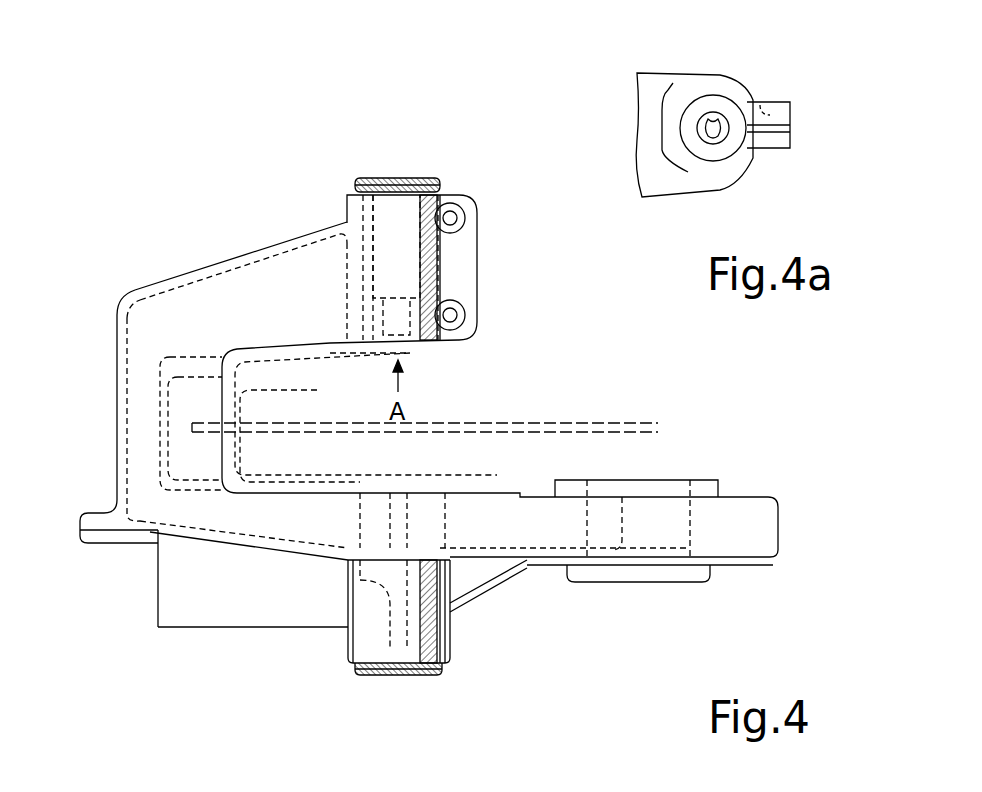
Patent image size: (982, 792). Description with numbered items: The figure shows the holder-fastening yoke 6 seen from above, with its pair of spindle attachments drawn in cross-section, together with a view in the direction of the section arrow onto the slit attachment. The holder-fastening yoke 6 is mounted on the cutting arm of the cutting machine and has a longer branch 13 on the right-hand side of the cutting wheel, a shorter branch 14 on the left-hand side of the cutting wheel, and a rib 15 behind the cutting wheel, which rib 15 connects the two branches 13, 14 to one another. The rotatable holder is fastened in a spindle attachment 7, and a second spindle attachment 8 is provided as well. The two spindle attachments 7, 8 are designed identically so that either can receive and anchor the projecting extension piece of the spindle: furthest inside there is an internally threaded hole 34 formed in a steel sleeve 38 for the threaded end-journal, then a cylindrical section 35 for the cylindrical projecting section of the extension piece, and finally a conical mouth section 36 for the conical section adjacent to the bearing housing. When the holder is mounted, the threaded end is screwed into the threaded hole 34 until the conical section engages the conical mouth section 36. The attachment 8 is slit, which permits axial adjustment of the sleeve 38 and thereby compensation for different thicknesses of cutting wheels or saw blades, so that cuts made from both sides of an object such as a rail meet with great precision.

In FIG. 4, the holder-fastening yoke 6 is at (124, 298).
In FIG. 4, the spindle attachment 7 is at (452, 648).
In FIG. 4, the second spindle attachment 8 is at (345, 210).
In FIG. 4A, the second spindle attachment 8 is at (748, 172).
In FIG. 4, the longer branch 13 is at (523, 540).
In FIG. 4, the shorter branch 14 is at (238, 270).
In FIG. 4, the rib 15 is at (152, 414).
In FIG. 4, the internally threaded hole 34 is at (410, 345).
In FIG. 4A, the internally threaded hole 34 is at (709, 112).
In FIG. 4, the cylindrical section 35 is at (405, 177).
In FIG. 4, the conical mouth section 36 is at (379, 176).
In FIG. 4, the steel sleeve 38 is at (372, 672).
In FIG. 4A, the steel sleeve 38 is at (732, 105).